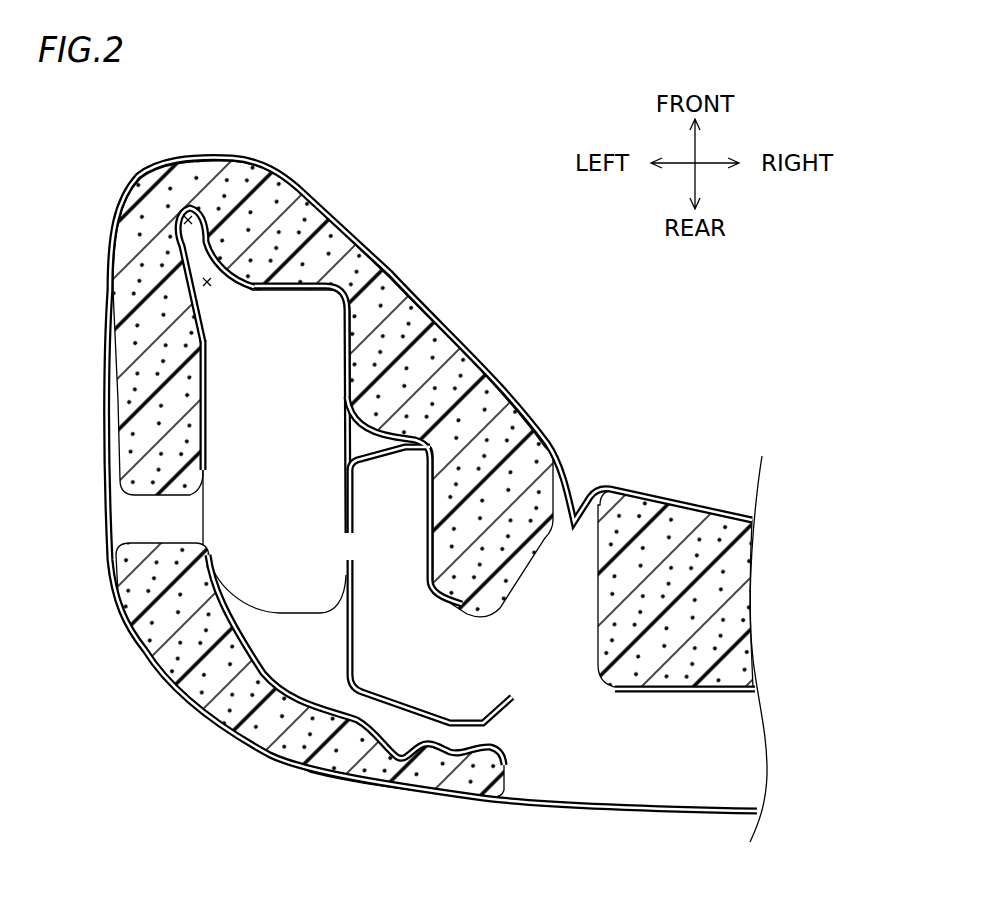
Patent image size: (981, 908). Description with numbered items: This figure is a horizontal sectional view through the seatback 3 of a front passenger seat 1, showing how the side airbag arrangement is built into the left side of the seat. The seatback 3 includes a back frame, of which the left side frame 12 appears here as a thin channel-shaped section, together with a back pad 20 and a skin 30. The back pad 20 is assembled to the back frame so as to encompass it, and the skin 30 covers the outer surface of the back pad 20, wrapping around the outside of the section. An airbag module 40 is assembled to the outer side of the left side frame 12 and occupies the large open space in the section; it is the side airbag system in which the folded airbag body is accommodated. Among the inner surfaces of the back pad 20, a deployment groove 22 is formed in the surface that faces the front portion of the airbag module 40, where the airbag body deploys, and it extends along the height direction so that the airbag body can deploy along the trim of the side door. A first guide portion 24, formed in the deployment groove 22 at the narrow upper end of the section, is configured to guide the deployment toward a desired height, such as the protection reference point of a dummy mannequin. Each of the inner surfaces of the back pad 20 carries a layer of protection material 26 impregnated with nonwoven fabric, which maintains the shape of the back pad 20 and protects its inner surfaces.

The front passenger seat 1 is at (669, 324).
The seatback 3 is at (658, 407).
The left side frame 12 is at (352, 644).
The back pad 20 is at (344, 250).
The deployment groove 22 is at (205, 283).
The first guide portion 24 is at (190, 204).
The protection material 26 is at (195, 385).
The skin 30 is at (385, 300).
The airbag module 40 is at (255, 510).